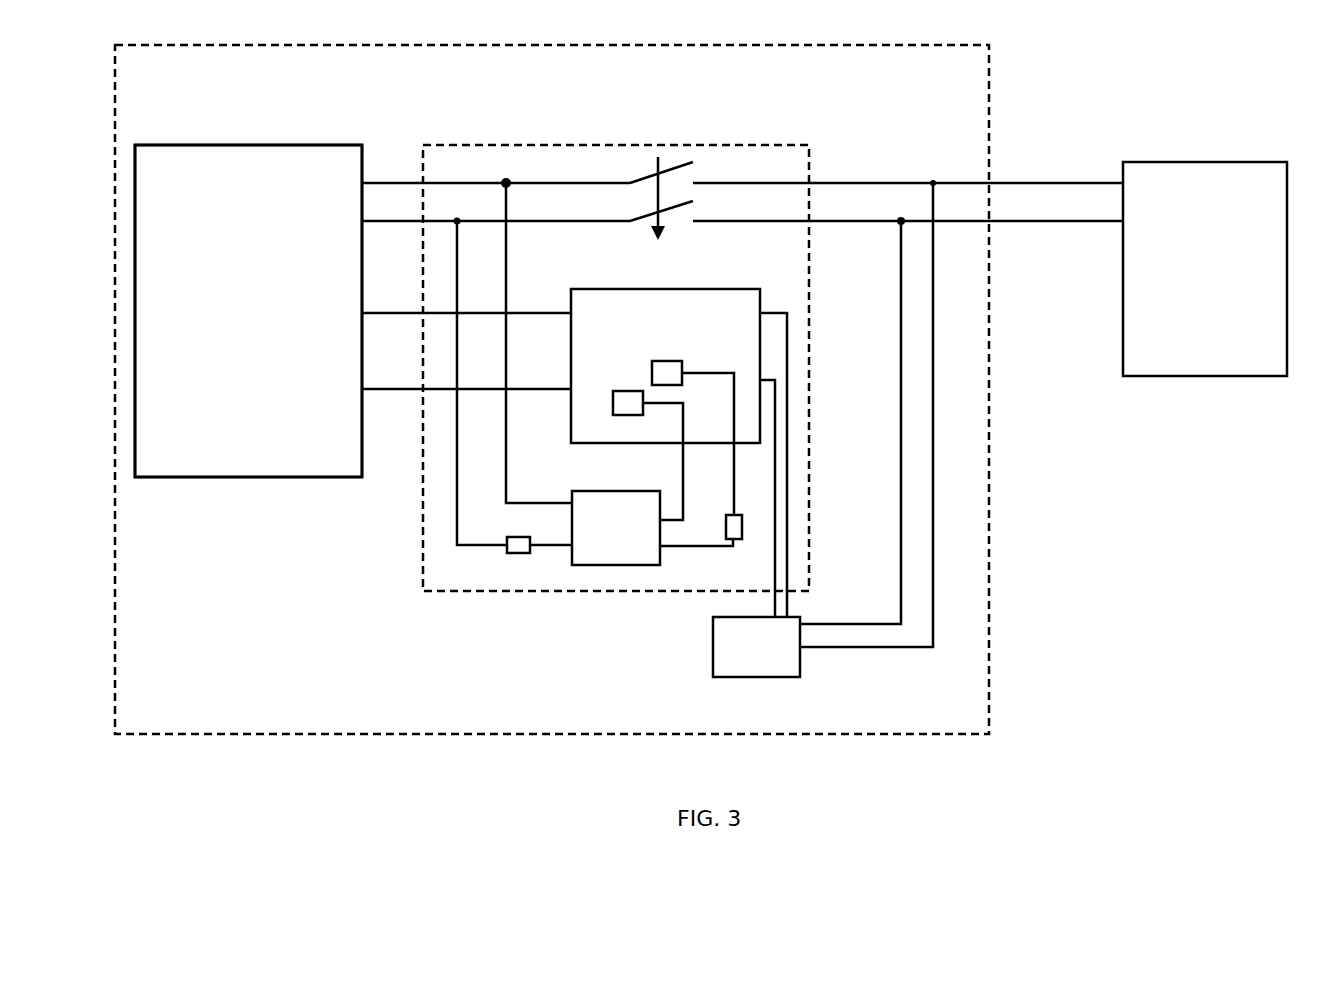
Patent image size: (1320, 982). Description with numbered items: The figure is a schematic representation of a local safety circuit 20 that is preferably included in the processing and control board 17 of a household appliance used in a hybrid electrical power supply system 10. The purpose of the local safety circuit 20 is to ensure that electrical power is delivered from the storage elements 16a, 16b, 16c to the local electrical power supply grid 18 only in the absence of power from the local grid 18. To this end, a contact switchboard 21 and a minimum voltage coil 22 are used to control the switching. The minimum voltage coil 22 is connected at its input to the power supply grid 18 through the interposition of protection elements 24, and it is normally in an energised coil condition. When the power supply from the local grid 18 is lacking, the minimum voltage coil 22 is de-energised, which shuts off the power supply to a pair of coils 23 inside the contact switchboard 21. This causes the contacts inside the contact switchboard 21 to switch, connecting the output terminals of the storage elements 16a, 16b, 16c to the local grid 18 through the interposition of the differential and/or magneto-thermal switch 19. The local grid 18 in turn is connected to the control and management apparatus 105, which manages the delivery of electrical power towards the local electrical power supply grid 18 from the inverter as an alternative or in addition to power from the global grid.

The hybrid electrical power supply system 10 is at (960, 702).
The storage element 16a is at (255, 162).
The storage element 16b is at (248, 311).
The storage element 16c is at (248, 311).
The processing and control board 17 is at (563, 582).
The local electrical power supply grid 18 is at (1036, 265).
The differential and/or magneto-thermal switch 19 is at (824, 428).
The local safety circuit 20 is at (556, 474).
The contact switchboard 21 is at (620, 315).
The minimum voltage coil 22 is at (618, 542).
The pair of coils 23 is at (623, 398).
The protection elements 24 is at (518, 552).
The control and management apparatus 105 is at (1205, 269).